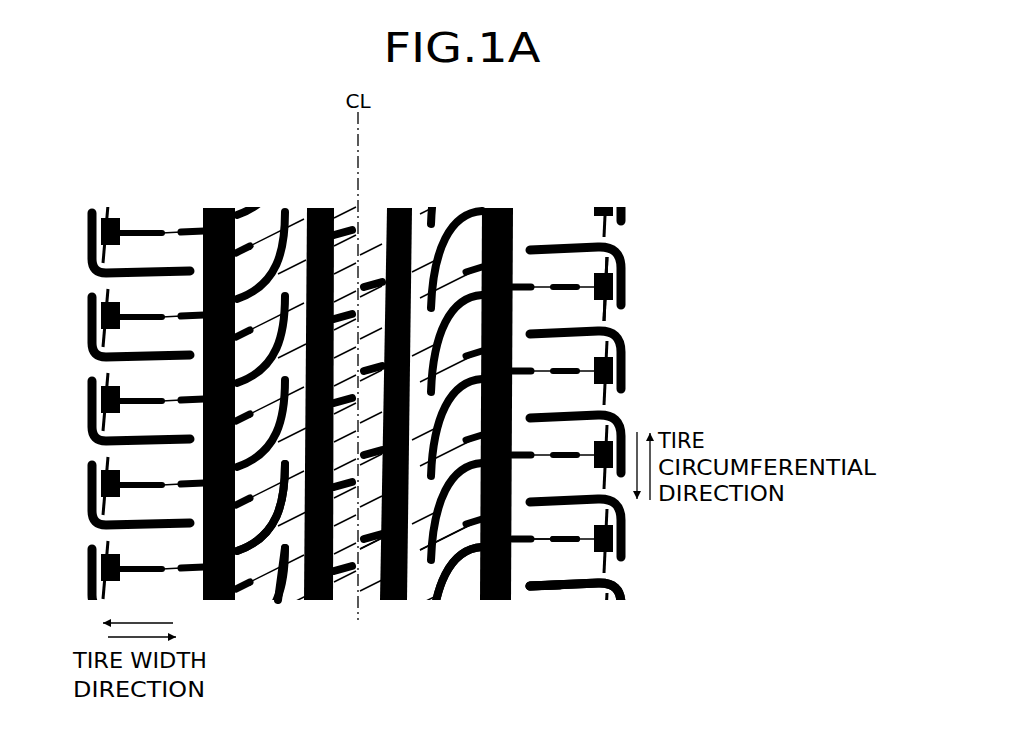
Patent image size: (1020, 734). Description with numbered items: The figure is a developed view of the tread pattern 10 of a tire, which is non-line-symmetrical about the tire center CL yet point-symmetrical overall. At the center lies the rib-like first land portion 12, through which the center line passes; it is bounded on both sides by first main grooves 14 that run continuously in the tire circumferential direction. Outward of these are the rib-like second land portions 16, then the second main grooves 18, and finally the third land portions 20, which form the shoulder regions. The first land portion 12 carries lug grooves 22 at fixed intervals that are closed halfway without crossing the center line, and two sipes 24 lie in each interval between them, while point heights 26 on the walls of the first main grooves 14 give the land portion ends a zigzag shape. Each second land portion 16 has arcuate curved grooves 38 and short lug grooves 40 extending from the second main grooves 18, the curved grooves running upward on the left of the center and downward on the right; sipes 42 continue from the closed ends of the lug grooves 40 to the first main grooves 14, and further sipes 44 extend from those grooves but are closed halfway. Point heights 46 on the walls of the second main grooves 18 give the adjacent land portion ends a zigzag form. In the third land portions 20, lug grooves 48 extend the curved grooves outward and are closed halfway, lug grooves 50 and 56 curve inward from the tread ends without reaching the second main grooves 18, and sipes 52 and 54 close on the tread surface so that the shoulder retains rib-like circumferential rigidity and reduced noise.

The tread pattern 10 is at (516, 148).
The first land portion 12 is at (381, 205).
The first main grooves 14 is at (334, 205).
The second land portions 16 is at (236, 205).
The second main grooves 18 is at (203, 205).
The third land portions 20 is at (88, 205).
The lug grooves 22 is at (368, 542).
The sipes 24 is at (281, 562).
The point heights 26 is at (298, 582).
The arcuate curved grooves 38 is at (262, 548).
The lug grooves 40 is at (470, 580).
The sipes 42 is at (440, 556).
The sipes 44 is at (401, 602).
The point heights 46 is at (480, 604).
The lug grooves 48 is at (604, 316).
The lug grooves 50 is at (590, 590).
The sipes 52 is at (520, 590).
The sipes 54 is at (541, 543).
The lug grooves 56 is at (582, 292).